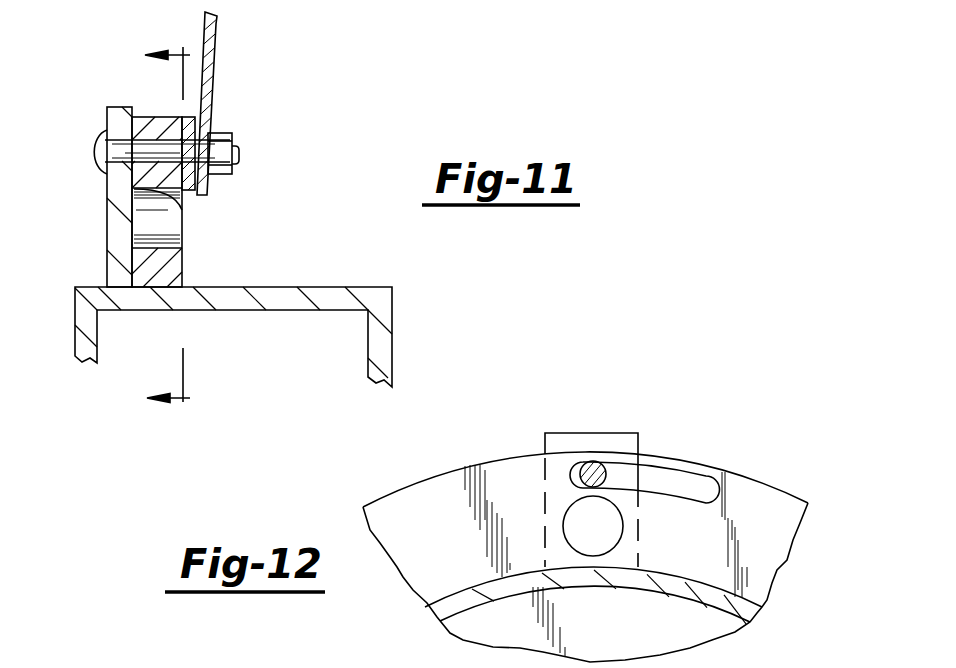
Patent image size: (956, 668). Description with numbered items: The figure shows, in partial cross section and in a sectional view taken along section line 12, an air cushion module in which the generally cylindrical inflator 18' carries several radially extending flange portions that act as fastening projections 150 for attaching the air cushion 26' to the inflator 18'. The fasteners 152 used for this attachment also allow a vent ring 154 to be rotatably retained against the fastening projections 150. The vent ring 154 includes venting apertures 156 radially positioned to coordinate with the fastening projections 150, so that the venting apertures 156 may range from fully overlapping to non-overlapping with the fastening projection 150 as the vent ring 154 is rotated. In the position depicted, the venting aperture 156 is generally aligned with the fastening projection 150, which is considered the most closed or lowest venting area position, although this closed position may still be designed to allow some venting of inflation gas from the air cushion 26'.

In FIG. 11, the section line 12- 12 is at (163, 228).
In FIG. 11, the inflator 18' is at (233, 315).
In FIG. 12, the inflator 18' is at (601, 557).
In FIG. 11, the air cushion 26' is at (241, 103).
In FIG. 11, the fastening projections 150 is at (118, 182).
In FIG. 12, the fastening projections 150 is at (628, 443).
In FIG. 11, the fasteners 152 is at (104, 146).
In FIG. 12, the fasteners 152 is at (588, 468).
In FIG. 11, the vent ring 154 is at (164, 271).
In FIG. 11, the venting apertures 156 is at (186, 212).
In FIG. 12, the venting apertures 156 is at (614, 517).